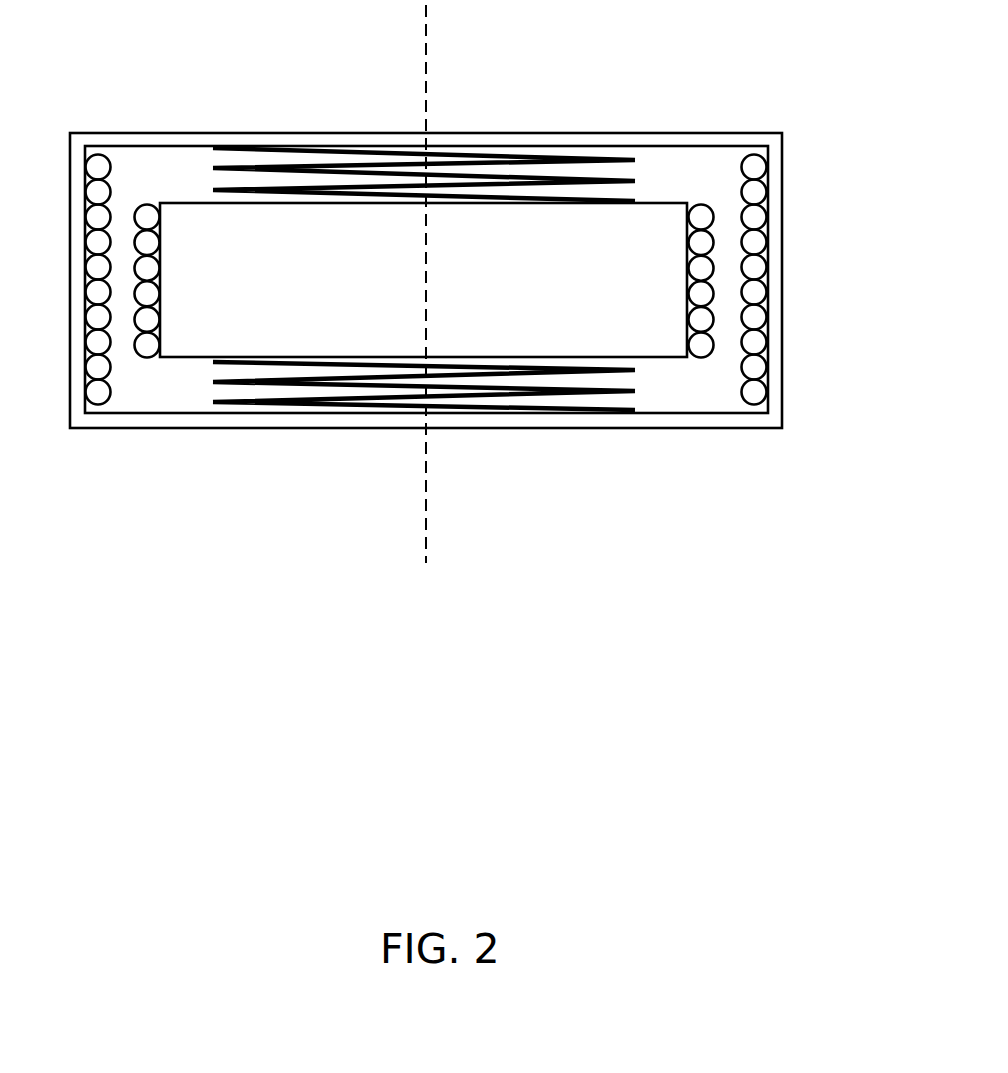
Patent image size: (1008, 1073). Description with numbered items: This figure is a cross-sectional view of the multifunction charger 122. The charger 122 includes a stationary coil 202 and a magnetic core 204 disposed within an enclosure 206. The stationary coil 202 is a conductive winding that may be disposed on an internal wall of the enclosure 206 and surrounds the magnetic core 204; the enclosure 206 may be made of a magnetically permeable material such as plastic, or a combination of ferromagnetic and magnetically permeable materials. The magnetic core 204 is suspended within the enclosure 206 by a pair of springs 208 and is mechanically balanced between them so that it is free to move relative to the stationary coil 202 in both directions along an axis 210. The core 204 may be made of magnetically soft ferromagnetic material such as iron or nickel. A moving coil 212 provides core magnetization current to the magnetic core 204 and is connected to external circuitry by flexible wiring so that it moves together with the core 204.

The multifunction charger 122 is at (478, 461).
The stationary coil 202 is at (767, 240).
The magnetic core 204 is at (652, 360).
The enclosure 206 is at (178, 133).
The springs 208 is at (636, 181).
The axis 210 is at (427, 48).
The moving coil 212 is at (697, 358).